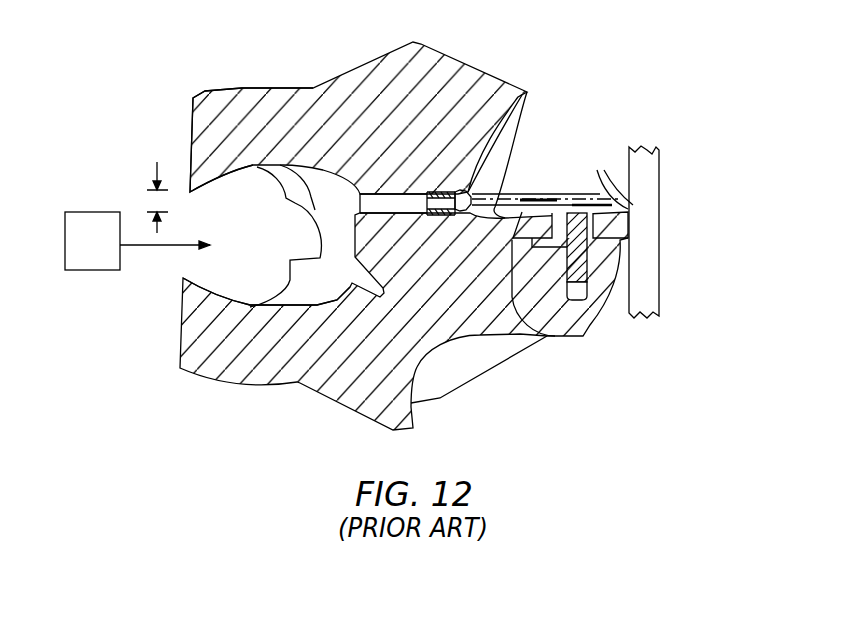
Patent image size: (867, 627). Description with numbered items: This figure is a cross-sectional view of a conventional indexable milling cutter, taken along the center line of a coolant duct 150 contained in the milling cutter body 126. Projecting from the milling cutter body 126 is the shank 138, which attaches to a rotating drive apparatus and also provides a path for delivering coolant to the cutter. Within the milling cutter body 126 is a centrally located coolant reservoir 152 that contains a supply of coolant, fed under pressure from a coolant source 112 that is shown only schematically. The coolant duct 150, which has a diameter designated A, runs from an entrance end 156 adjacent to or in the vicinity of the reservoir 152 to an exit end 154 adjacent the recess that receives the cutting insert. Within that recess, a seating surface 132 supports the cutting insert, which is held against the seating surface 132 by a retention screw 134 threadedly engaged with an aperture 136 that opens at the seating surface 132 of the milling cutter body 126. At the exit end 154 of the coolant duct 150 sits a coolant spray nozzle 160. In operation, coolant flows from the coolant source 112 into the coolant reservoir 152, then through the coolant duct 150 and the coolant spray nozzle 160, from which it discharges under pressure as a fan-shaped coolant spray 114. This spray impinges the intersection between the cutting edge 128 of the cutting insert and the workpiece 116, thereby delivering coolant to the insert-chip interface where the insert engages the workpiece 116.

The coolant source 112 is at (110, 253).
The fan-shaped coolant spray 114 is at (582, 197).
The workpiece 116 is at (649, 167).
The milling cutter body 126 is at (453, 68).
The cutting edge 128 is at (628, 210).
The seating surface 132 is at (547, 337).
The retention screw 134 is at (587, 259).
The aperture 136 is at (590, 292).
The shank 138 is at (262, 88).
The coolant duct 150 is at (390, 194).
The coolant reservoir 152 is at (265, 248).
The exit end 154 is at (462, 183).
The entrance end 156 is at (337, 288).
The coolant spray nozzle 160 is at (487, 200).